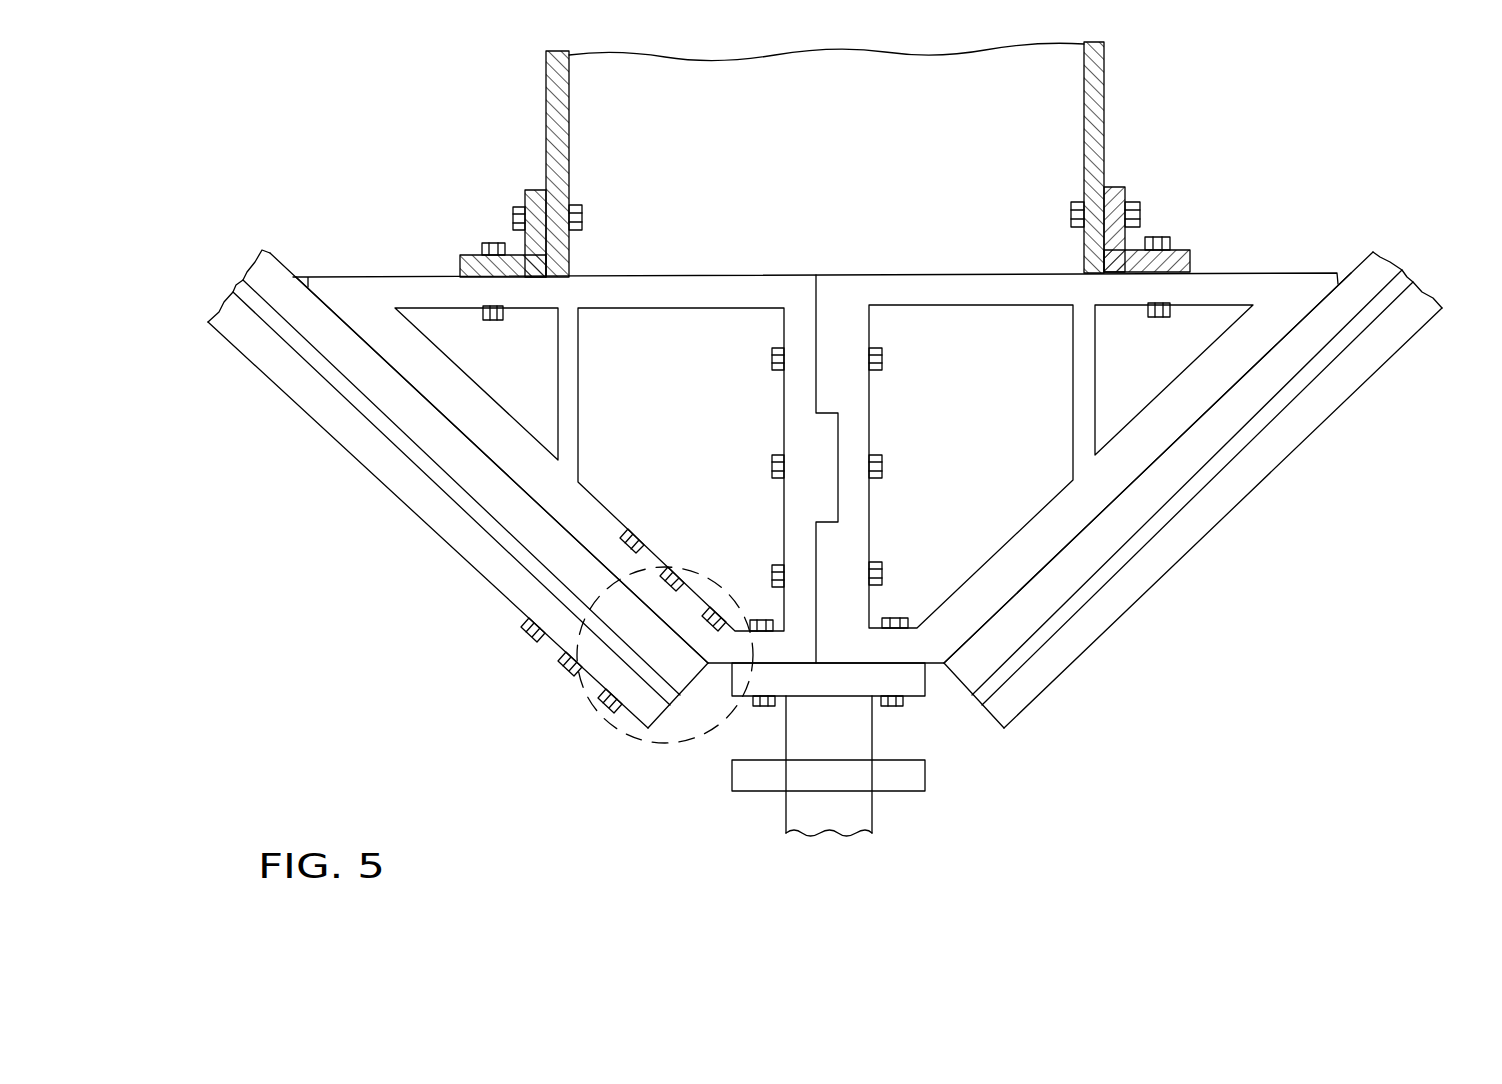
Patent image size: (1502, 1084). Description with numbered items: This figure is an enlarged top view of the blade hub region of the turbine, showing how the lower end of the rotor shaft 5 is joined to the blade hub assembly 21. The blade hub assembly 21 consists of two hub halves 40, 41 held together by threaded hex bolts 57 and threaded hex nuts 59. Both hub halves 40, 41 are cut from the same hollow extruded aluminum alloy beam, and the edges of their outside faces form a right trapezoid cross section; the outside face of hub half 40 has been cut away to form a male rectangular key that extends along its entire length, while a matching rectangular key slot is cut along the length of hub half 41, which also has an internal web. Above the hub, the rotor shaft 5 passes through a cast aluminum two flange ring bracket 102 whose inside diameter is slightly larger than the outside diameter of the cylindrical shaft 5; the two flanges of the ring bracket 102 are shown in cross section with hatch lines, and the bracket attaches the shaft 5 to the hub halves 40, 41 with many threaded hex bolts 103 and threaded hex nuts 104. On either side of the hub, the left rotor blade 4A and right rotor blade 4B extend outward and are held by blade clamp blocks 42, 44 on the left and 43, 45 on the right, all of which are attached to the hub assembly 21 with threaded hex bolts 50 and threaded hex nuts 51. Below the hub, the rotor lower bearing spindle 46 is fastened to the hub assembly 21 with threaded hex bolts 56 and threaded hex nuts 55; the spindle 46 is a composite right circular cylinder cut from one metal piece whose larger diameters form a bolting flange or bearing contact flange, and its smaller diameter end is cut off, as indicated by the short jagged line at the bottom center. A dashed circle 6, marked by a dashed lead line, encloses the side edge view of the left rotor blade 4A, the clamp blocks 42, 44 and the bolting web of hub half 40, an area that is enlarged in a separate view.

The blade hub assembly 21 is at (422, 127).
The rotor shaft 5 is at (540, 120).
The two flange ring bracket 102 is at (527, 195).
The threaded hex bolts 103 is at (513, 220).
The threaded hex nuts 104 is at (575, 232).
The hub half 40 is at (388, 277).
The hub half 41 is at (1218, 270).
The blade clamp block 42 is at (294, 275).
The blade clamp block 43 is at (1357, 265).
The left rotor blade 4A is at (235, 283).
The right rotor blade 4B is at (1415, 273).
The blade clamp block 44 is at (632, 725).
The blade clamp block 45 is at (1083, 663).
The rotor lower bearing spindle 46 is at (925, 780).
The threaded hex bolts 50 is at (632, 513).
The threaded hex nuts 51 is at (523, 635).
The threaded hex nuts 55 is at (767, 707).
The threaded hex bolts 56 is at (763, 620).
The threaded hex bolts 57 is at (772, 356).
The threaded hex nuts 59 is at (882, 362).
The dashed circle 6 is at (650, 745).